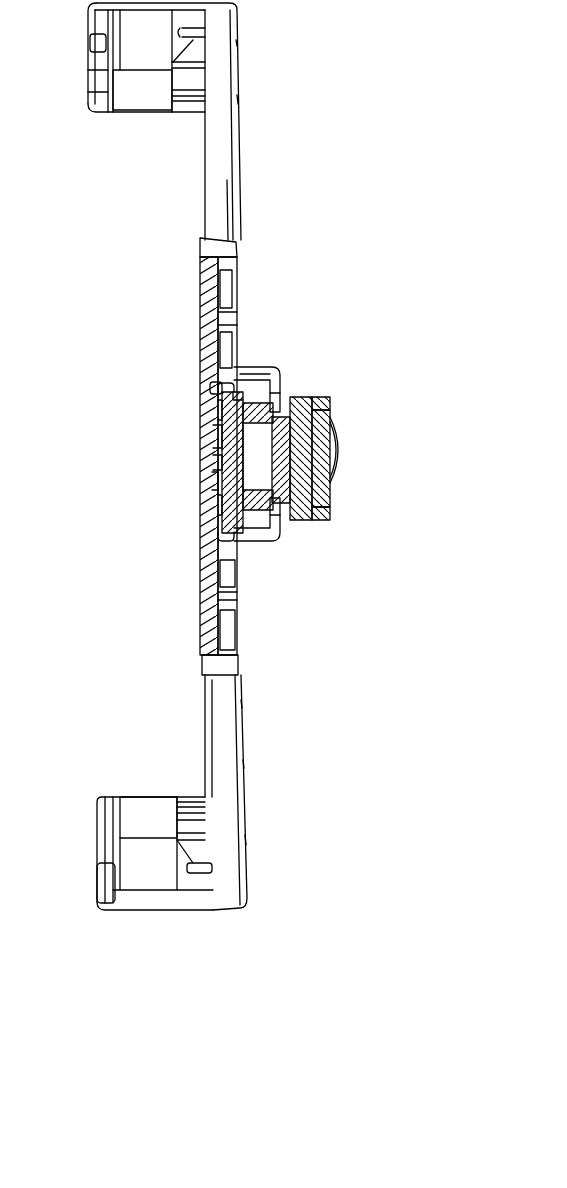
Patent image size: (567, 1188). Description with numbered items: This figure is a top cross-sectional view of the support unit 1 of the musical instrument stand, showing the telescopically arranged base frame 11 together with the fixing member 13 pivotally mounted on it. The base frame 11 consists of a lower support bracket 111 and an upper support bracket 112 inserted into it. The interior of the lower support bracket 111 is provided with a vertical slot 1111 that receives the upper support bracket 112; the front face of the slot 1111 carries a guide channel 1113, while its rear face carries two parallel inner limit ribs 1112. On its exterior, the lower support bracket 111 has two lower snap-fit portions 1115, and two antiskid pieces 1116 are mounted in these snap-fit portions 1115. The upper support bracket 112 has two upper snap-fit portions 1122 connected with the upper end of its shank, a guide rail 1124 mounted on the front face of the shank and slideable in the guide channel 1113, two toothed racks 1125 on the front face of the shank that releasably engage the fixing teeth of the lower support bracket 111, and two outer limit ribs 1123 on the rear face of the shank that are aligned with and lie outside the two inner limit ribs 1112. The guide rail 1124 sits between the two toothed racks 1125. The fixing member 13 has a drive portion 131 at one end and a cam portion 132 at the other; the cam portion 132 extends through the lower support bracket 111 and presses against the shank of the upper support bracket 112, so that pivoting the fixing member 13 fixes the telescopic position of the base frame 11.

The support unit 1 is at (444, 643).
The base frame 11 is at (354, 604).
The lower support bracket 111 is at (218, 152).
The slot 1111 is at (213, 440).
The inner limit ribs 1112 is at (272, 398).
The guide channel 1113 is at (215, 463).
The lower snap-fit portions 1115 is at (98, 88).
The antiskid pieces 1116 is at (142, 103).
The upper support bracket 112 is at (238, 388).
The upper snap-fit portions 1122 is at (217, 392).
The outer limit ribs 1123 is at (262, 378).
The guide rail 1124 is at (212, 478).
The toothed racks 1125 is at (218, 410).
The fixing member 13 is at (370, 431).
The drive portion 131 is at (328, 456).
The cam portion 132 is at (260, 465).